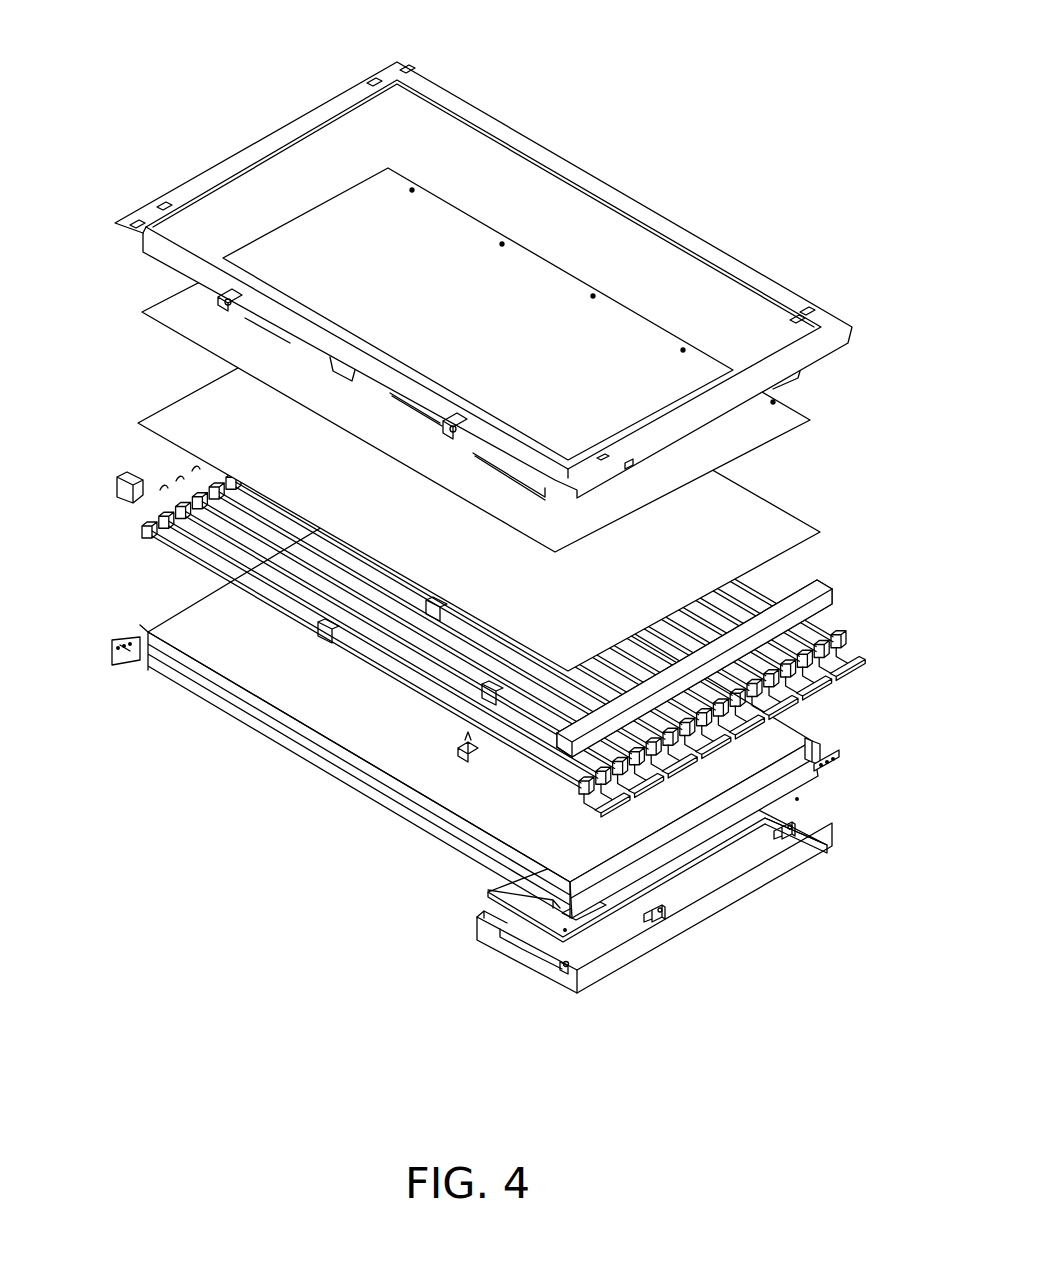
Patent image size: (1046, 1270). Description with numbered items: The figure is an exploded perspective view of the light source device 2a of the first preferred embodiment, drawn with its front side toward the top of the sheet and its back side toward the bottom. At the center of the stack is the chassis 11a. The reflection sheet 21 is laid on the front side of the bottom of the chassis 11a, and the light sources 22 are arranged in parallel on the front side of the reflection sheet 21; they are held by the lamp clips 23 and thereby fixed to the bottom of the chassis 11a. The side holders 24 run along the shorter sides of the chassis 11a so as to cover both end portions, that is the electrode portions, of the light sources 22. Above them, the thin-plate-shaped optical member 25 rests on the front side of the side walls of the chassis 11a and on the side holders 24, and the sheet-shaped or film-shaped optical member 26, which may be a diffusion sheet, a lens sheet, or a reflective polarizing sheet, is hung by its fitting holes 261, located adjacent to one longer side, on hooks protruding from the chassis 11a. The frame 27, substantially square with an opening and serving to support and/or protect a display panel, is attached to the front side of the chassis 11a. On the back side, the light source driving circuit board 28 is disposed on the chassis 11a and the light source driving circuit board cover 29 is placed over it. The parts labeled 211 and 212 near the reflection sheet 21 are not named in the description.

The light source device 2a is at (806, 1096).
The chassis 11a is at (800, 779).
The reflection sheet 21 is at (187, 607).
The chassis side rail 211 is at (233, 723).
The chassis side wall 212 is at (813, 727).
The light sources 22 is at (823, 627).
The lamp clips 23 is at (477, 755).
The side holders 24 is at (117, 488).
The optical member having a thin plate shape 25 is at (826, 527).
The sheet-shaped or film-shaped optical member 26 is at (250, 248).
The fitting holes 261 is at (413, 190).
The frame 27 is at (850, 345).
The light source driving circuit board 28 is at (737, 835).
The light source driving circuit board cover 29 is at (693, 922).